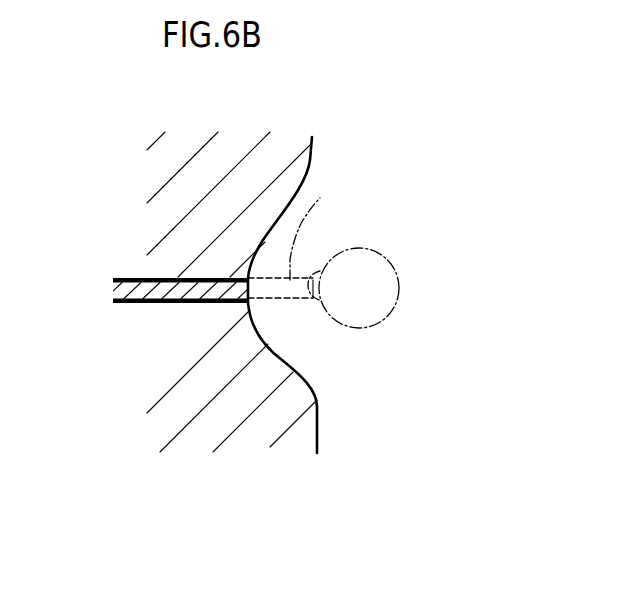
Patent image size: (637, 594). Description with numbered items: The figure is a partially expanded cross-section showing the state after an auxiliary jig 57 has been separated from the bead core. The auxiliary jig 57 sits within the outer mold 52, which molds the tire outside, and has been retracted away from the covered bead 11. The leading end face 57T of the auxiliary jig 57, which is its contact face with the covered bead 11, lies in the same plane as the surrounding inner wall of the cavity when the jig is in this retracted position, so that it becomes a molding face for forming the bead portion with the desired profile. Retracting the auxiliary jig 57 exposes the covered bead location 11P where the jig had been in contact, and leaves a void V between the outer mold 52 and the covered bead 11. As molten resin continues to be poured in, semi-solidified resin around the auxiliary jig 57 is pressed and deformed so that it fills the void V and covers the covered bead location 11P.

The outer mold 52 is at (183, 190).
The auxiliary jig 57 is at (135, 292).
The leading end face of the auxiliary jig 57T is at (250, 305).
The void V is at (267, 279).
The covered bead 11 is at (398, 278).
The covered bead location 11P is at (300, 282).